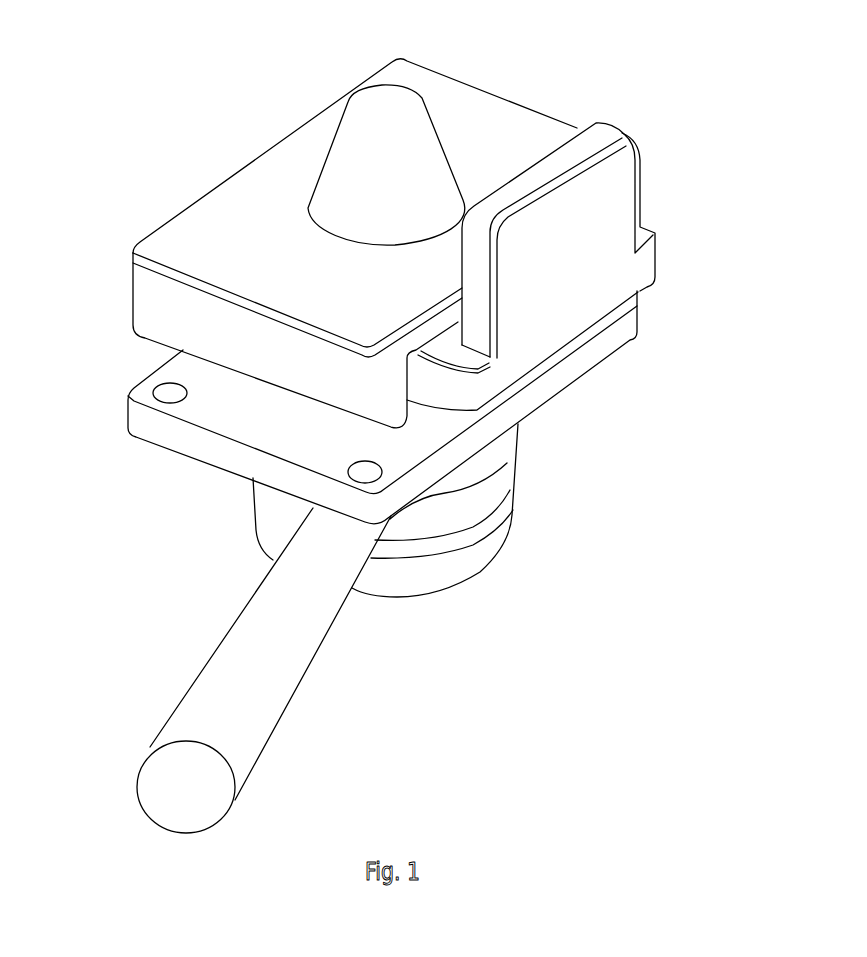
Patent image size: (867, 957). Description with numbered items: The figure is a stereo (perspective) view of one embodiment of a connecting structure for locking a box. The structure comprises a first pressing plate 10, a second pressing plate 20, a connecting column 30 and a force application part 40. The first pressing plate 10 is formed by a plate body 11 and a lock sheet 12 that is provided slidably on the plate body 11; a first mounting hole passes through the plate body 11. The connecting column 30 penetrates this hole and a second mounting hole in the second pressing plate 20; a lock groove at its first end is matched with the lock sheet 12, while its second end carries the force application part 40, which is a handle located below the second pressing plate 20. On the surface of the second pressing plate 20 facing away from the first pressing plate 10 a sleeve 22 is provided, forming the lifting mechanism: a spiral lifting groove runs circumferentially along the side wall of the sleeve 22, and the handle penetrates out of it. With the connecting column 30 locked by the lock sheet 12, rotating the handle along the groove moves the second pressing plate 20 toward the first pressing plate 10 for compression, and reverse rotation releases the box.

The first pressing plate 10 is at (517, 105).
The plate body 11 is at (263, 238).
The lock sheet 12 is at (573, 285).
The second pressing plate 20 is at (163, 438).
The sleeve 22 is at (463, 567).
The connecting column 30 is at (383, 173).
The force application part 40 is at (253, 695).